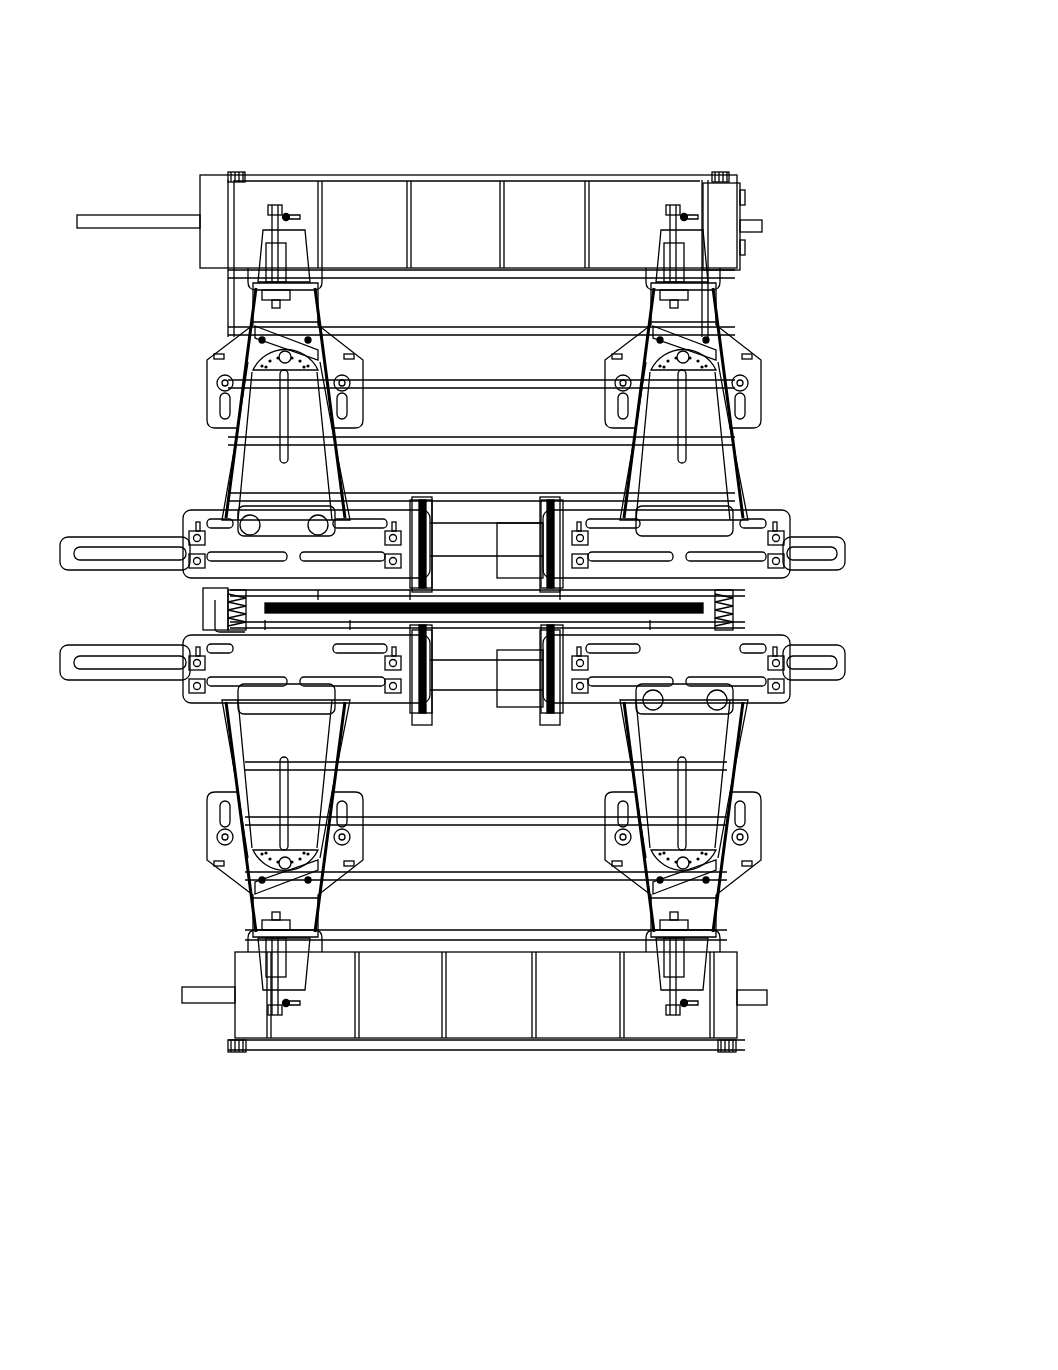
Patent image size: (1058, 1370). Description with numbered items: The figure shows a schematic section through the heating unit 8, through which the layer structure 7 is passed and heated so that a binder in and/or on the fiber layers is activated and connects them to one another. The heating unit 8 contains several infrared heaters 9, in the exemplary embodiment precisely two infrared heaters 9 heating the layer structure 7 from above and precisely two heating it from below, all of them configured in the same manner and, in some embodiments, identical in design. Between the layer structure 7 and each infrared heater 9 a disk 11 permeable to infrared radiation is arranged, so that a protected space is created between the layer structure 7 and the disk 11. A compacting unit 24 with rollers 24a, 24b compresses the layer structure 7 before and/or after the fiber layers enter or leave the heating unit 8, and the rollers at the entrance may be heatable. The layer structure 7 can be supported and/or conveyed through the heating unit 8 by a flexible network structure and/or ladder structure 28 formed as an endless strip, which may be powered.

The heating unit 8 is at (633, 117).
The network structure and/or ladder structure 28 is at (298, 173).
The infrared heater 9 is at (165, 360).
The disk 11 is at (235, 575).
The compacting unit 24 is at (460, 625).
The roller 24a is at (517, 530).
The roller 24b is at (500, 693).
The layer structure 7 is at (350, 617).